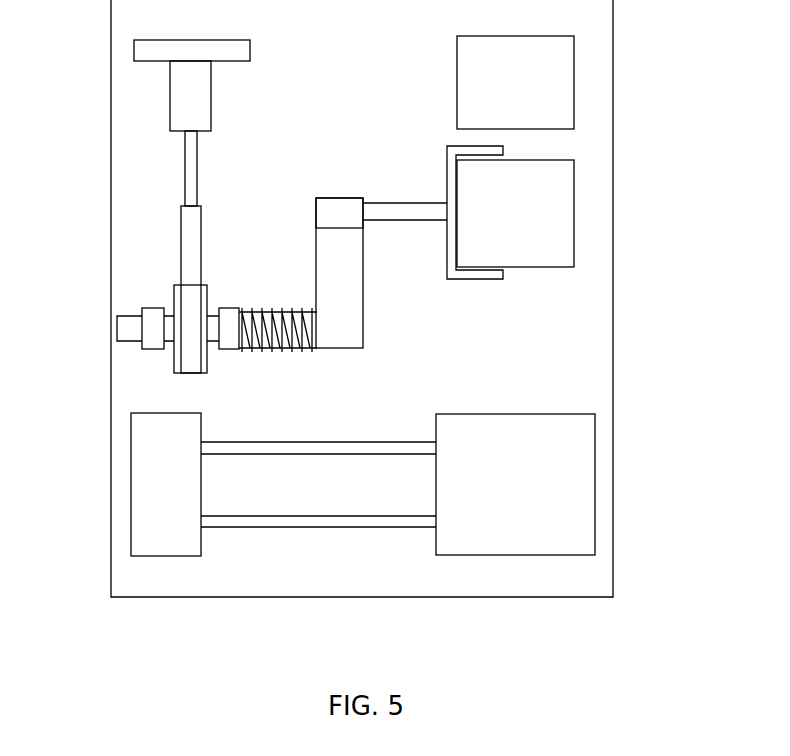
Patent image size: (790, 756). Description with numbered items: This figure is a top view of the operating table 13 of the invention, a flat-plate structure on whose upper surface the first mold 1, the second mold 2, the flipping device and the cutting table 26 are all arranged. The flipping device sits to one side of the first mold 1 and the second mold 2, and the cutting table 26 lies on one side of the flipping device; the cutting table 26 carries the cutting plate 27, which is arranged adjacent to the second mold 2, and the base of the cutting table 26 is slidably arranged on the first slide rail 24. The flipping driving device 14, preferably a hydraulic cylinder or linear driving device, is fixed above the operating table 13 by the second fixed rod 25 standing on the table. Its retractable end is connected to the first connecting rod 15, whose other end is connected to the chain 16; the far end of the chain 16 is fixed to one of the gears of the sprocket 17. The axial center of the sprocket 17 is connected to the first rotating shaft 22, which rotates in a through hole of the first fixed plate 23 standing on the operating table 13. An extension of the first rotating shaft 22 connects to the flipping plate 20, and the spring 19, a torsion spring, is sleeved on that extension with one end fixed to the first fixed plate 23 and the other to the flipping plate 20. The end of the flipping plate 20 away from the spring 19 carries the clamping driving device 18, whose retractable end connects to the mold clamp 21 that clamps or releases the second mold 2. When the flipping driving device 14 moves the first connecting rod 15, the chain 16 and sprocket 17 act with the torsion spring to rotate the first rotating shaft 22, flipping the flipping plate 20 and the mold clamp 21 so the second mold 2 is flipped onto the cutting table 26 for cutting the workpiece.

The first mold 1 is at (545, 83).
The second mold 2 is at (550, 214).
The operating table 13 is at (120, 481).
The flipping driving device 14 is at (183, 98).
The first connecting rod 15 is at (183, 168).
The chain 16 is at (188, 247).
The sprocket 17 is at (173, 297).
The clamping driving device 18 is at (338, 210).
The spring 19 is at (277, 312).
The flipping plate 20 is at (347, 293).
The mold clamp 21 is at (467, 275).
The first rotating shaft 22 is at (130, 329).
The first fixed plate 23 is at (228, 320).
The first slide rail 24 is at (395, 455).
The second fixed rod 25 is at (165, 52).
The cutting table 26 is at (178, 525).
The cutting plate 27 is at (560, 490).